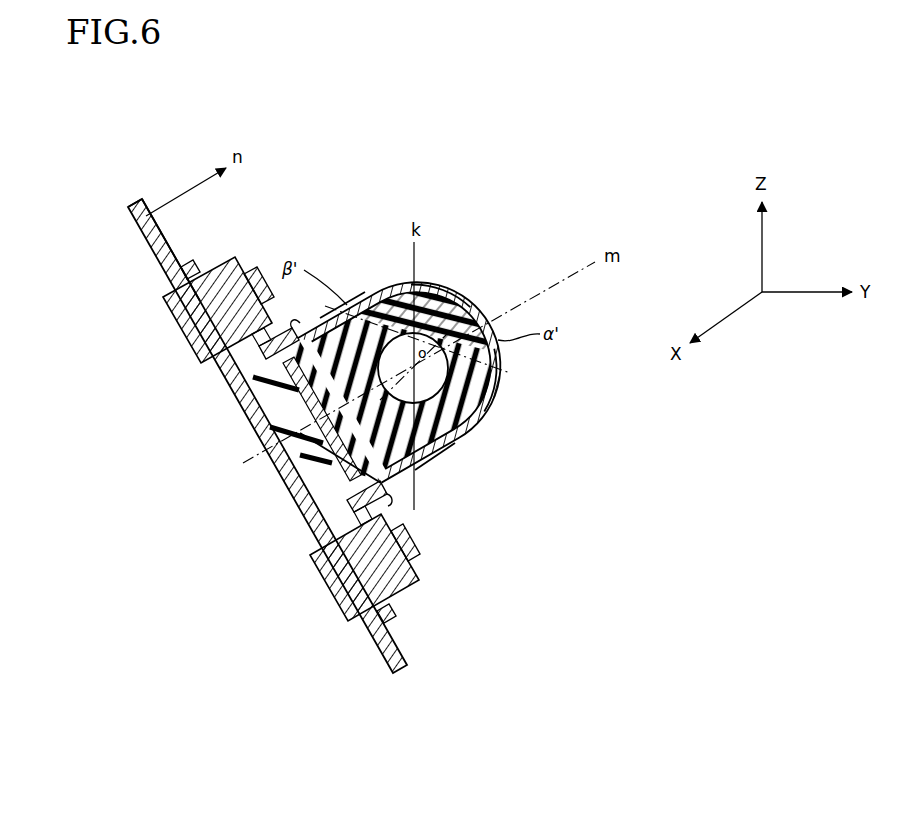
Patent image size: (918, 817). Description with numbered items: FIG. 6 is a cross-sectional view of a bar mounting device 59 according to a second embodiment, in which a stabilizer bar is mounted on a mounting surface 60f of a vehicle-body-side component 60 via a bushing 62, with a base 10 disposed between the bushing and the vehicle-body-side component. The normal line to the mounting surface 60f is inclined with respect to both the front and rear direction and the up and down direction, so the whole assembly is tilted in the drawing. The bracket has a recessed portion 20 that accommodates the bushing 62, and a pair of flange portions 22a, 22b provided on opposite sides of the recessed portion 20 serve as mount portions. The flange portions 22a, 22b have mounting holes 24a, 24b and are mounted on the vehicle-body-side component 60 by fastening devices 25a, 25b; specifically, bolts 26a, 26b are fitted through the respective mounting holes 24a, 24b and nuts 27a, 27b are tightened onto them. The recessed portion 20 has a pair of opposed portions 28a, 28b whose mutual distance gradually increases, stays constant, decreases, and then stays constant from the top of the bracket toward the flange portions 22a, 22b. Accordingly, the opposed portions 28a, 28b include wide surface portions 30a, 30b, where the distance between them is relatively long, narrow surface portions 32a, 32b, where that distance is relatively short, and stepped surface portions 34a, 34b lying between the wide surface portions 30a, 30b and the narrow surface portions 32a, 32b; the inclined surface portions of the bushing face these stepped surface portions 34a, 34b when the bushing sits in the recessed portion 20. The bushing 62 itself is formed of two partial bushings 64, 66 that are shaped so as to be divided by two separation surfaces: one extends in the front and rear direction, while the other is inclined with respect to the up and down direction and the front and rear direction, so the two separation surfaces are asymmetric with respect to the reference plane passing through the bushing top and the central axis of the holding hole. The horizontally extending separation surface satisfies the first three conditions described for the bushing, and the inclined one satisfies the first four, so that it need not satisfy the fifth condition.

The base 10 is at (300, 463).
The recessed portion 20 is at (438, 367).
The flange portion 22a is at (187, 262).
The flange portion 22b is at (389, 618).
The mounting hole 24a is at (192, 312).
The mounting hole 24b is at (343, 582).
The fastening device 25a is at (221, 312).
The fastening device 25b is at (393, 589).
The bolt 26a is at (245, 333).
The bolt 26b is at (418, 546).
The nut 27a is at (246, 275).
The nut 27b is at (404, 586).
The opposed portion 28a is at (452, 277).
The opposed portion 28b is at (484, 446).
The wide surface portion 30a is at (356, 326).
The wide surface portion 30b is at (449, 436).
The narrow surface portion 32a is at (265, 388).
The narrow surface portion 32b is at (320, 513).
The stepped surface portion 34a is at (297, 366).
The stepped surface portion 34b is at (346, 556).
The bar mounting device 59 is at (399, 198).
The vehicle-body-side component 60 is at (178, 272).
The mounting surface 60f is at (165, 222).
The bushing 62 is at (494, 412).
The partial bushing 64 is at (382, 328).
The partial bushing 66 is at (481, 385).